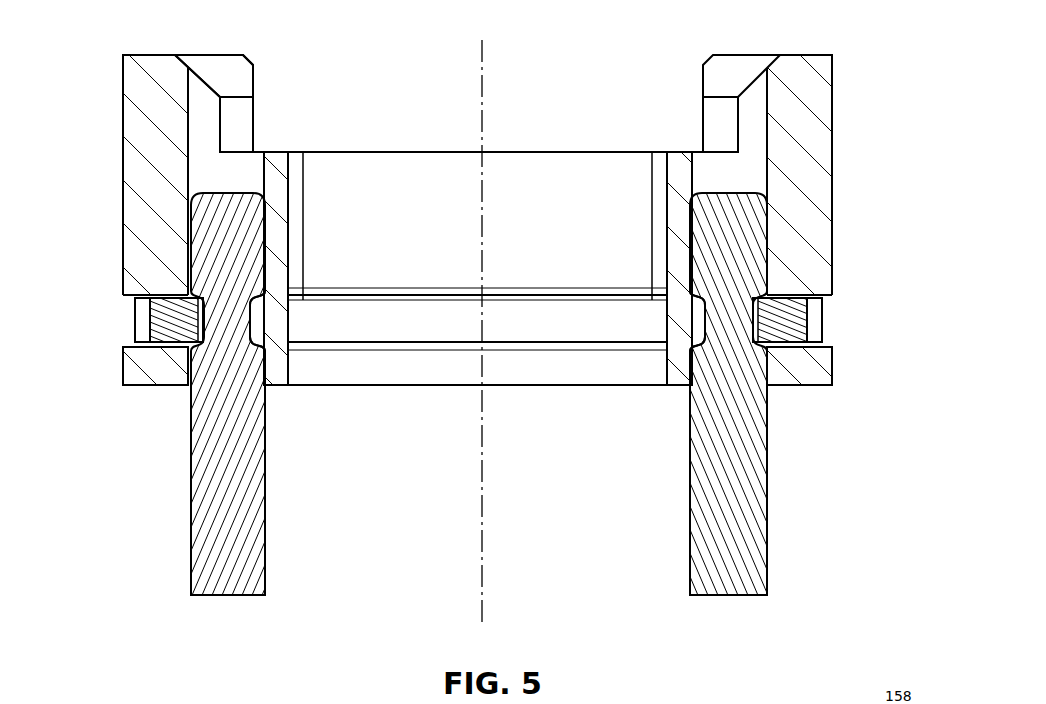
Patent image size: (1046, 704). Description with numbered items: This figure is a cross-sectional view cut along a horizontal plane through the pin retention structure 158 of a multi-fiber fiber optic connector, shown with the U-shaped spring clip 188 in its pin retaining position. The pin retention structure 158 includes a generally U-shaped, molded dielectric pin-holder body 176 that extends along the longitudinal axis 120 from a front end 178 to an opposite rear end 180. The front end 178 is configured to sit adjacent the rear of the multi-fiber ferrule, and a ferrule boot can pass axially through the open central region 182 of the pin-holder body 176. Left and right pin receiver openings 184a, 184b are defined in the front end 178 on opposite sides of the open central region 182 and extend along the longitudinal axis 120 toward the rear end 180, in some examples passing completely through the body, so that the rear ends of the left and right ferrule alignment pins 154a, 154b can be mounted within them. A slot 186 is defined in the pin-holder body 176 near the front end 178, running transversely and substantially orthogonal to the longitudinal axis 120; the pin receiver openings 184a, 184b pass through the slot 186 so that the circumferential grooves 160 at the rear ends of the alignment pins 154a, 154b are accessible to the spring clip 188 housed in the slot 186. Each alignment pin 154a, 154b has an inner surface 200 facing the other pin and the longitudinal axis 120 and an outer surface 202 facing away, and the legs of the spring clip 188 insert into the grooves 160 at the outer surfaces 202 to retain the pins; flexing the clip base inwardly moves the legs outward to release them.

The longitudinal axis 120 is at (481, 590).
The left ferrule alignment pin 154a is at (767, 563).
The right ferrule alignment pin 154b is at (190, 566).
The pin retention structure 158 is at (848, 89).
The circumferential groove 160 is at (276, 331).
The pin-holder body 176 is at (123, 163).
The front end 178 is at (140, 387).
The rear end 180 is at (140, 54).
The open central region 182 is at (528, 168).
The left pin receiver opening 184a is at (716, 164).
The right pin receiver opening 184b is at (237, 164).
The slot 186 is at (827, 323).
The U-shaped spring clip 188 is at (135, 322).
The inner surface 200 is at (275, 503).
The outer surface 202 is at (181, 503).